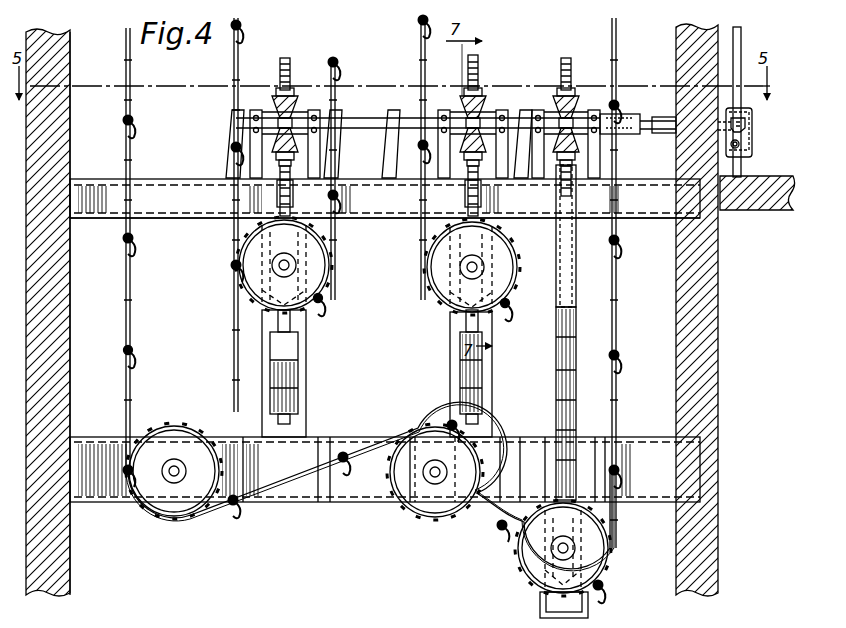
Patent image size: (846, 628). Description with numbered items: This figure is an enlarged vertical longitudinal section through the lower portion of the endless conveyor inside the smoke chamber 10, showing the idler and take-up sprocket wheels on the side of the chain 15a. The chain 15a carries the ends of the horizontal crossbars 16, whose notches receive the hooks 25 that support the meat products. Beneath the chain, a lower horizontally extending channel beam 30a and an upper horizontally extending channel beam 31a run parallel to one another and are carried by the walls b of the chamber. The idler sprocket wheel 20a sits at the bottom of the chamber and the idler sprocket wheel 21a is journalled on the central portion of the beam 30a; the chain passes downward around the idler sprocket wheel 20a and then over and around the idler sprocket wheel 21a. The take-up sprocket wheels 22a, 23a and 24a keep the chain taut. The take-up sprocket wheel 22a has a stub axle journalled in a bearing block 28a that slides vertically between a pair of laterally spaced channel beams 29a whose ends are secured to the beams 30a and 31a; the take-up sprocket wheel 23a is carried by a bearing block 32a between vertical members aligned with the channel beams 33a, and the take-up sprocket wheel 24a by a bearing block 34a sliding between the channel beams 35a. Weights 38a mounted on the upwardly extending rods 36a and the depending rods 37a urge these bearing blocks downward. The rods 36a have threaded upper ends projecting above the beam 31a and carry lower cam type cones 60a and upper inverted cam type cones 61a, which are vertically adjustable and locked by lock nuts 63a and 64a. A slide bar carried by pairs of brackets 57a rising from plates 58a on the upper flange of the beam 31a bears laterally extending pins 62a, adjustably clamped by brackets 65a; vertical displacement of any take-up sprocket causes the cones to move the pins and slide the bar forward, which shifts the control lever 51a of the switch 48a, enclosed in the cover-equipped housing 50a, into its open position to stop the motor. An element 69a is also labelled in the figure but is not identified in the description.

The smoke chamber 10 is at (69, 376).
The walls b is at (70, 290).
The endless chain 15a is at (133, 286).
The crossbars 16 is at (133, 350).
The hooks 25 is at (140, 365).
The idler sprocket wheel 20a is at (170, 512).
The idler sprocket wheel 21a is at (420, 512).
The take-up sprocket wheel 22a is at (606, 578).
The take-up sprocket wheel 23a is at (500, 312).
The take-up sprocket wheel 24a is at (324, 296).
The bearing block 28a is at (513, 561).
The channel beams 29a is at (590, 416).
The horizontally extending channel beam 30a is at (651, 501).
The horizontally extending channel beam 31a is at (655, 221).
The bearing block 32a is at (446, 302).
The channel beams 33a is at (450, 337).
The bearing block 34a is at (250, 300).
The channel beams 35a is at (262, 348).
The vertically extending rods 36a is at (286, 58).
The depending rods 37a is at (290, 326).
The weights 38a is at (288, 382).
The switch 48a is at (755, 147).
The cover-equipped housing 50a is at (736, 205).
The control lever 51a is at (752, 130).
The brackets 57a is at (598, 153).
The plates 58a is at (324, 180).
The lower cam type cones 60a is at (272, 138).
The upper inverted cam type cones 61a is at (270, 100).
The laterally extending pins 62a is at (293, 112).
The lock nuts 63a is at (272, 152).
The lock nuts 64a is at (291, 86).
The brackets 65a is at (300, 130).
The drive shaft 69a is at (373, 116).